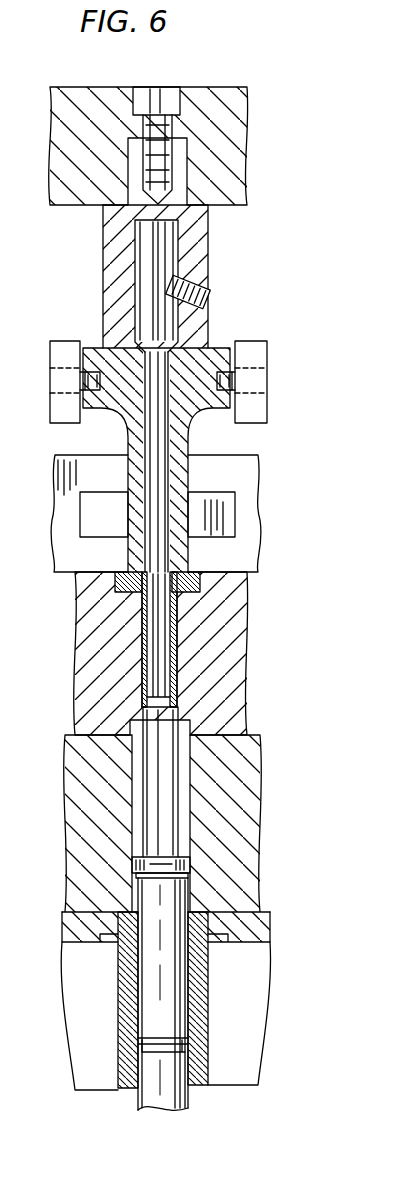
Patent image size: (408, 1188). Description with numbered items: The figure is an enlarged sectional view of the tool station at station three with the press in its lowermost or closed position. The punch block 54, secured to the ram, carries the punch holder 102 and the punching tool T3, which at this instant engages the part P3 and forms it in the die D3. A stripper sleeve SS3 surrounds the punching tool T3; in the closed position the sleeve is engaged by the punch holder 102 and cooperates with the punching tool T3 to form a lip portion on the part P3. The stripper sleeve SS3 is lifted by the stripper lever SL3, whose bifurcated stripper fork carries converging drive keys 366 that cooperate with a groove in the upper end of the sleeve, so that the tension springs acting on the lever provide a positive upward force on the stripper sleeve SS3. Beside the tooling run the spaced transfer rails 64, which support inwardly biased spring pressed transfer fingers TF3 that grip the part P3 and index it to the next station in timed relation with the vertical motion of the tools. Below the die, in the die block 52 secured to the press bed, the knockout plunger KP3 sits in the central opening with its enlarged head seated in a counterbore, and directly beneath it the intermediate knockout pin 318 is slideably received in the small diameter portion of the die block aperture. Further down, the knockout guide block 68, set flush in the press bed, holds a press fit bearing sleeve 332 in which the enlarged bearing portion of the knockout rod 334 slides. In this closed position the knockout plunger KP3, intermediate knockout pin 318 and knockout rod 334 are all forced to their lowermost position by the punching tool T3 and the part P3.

The punch block 54 is at (220, 140).
The punch holder 102 is at (195, 247).
The punching tool T3 is at (158, 367).
The stripper sleeve SS3 is at (208, 440).
The drive keys 366 is at (90, 376).
The stripper lever SL3 is at (262, 403).
The transfer rails 64 is at (248, 490).
The transfer finger TF3 is at (222, 526).
The die D3 is at (230, 604).
The part P3 is at (180, 640).
The knockout plunger KP3 is at (160, 775).
The die block 52 is at (235, 810).
The intermediate knockout pin 318 is at (175, 900).
The knockout guide block 68 is at (212, 925).
The bearing sleeve 332 is at (190, 996).
The knockout rod 334 is at (170, 1068).